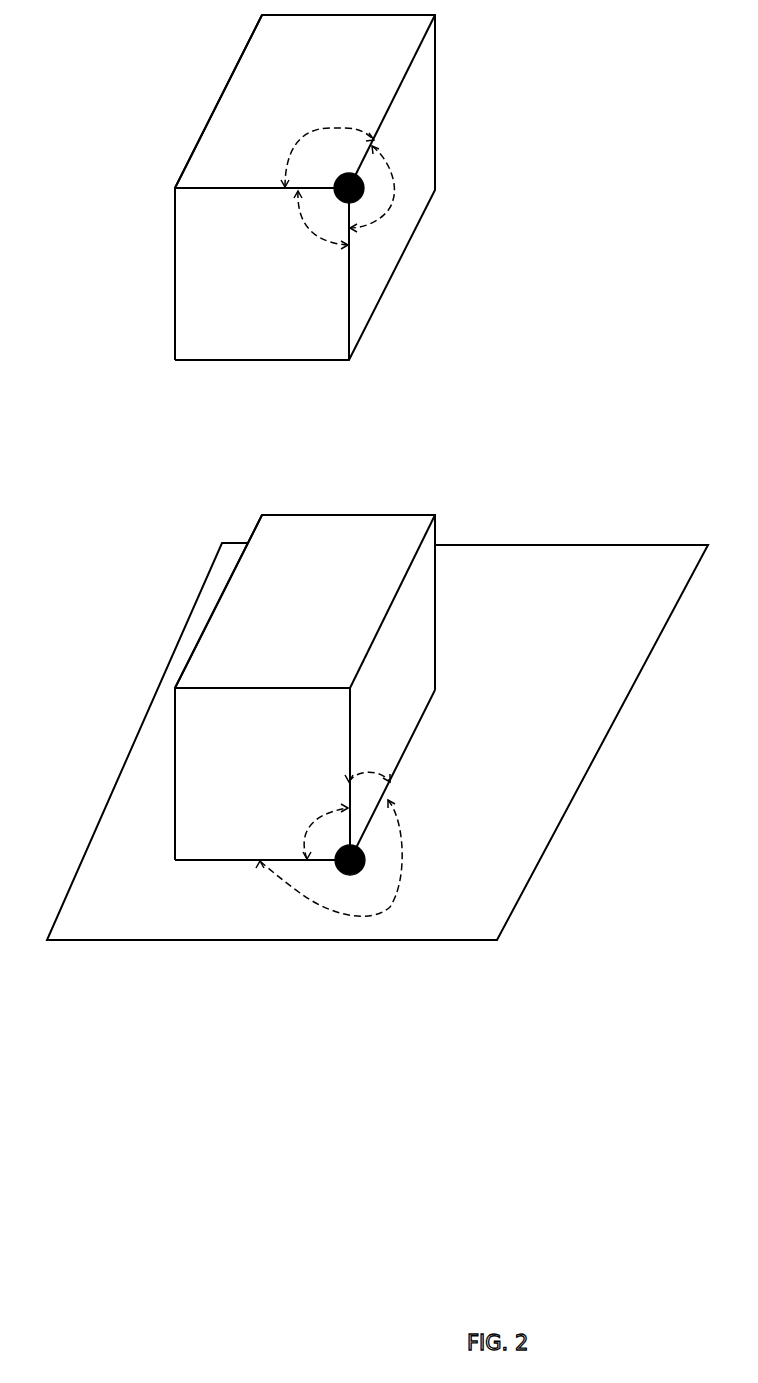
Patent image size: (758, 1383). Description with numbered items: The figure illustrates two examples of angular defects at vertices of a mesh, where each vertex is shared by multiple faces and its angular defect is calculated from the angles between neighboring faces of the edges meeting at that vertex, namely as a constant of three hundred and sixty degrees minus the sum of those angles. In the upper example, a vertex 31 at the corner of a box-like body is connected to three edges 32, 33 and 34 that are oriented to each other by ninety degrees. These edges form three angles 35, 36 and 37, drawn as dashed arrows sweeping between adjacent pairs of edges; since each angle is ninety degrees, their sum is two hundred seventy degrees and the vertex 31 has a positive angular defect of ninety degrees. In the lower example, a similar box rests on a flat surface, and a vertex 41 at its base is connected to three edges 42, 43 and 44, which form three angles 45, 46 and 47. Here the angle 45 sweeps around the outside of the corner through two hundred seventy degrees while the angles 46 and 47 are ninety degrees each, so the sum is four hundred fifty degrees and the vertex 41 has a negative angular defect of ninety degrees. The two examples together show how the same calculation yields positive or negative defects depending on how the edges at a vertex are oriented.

The vertex 31 is at (343, 181).
The edge 32 is at (406, 72).
The edge 33 is at (249, 187).
The edge 34 is at (346, 294).
The angle 35 is at (324, 126).
The angle 36 is at (395, 205).
The angle 37 is at (305, 240).
The vertex 41 is at (345, 874).
The edge 42 is at (430, 706).
The edge 43 is at (208, 858).
The edge 44 is at (346, 712).
The angle 45 is at (404, 848).
The angle 46 is at (362, 750).
The angle 47 is at (394, 773).